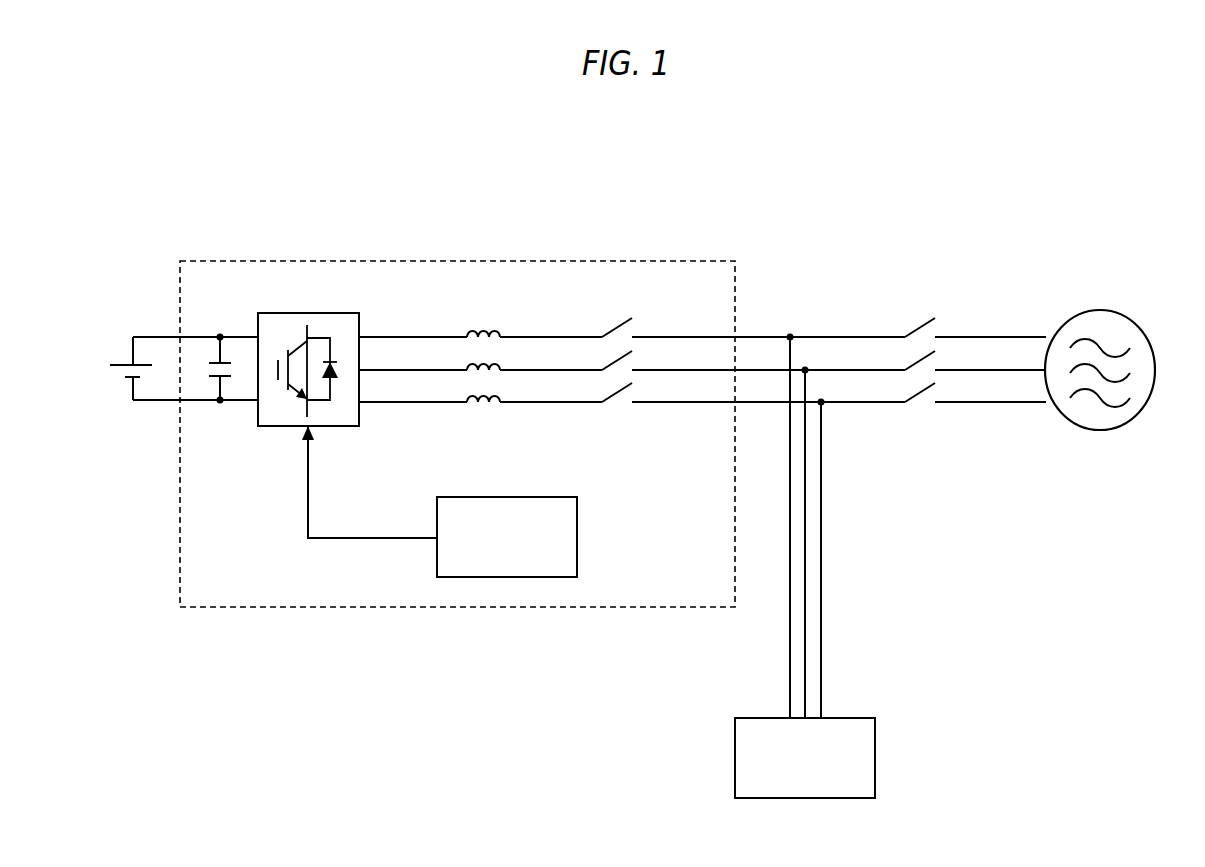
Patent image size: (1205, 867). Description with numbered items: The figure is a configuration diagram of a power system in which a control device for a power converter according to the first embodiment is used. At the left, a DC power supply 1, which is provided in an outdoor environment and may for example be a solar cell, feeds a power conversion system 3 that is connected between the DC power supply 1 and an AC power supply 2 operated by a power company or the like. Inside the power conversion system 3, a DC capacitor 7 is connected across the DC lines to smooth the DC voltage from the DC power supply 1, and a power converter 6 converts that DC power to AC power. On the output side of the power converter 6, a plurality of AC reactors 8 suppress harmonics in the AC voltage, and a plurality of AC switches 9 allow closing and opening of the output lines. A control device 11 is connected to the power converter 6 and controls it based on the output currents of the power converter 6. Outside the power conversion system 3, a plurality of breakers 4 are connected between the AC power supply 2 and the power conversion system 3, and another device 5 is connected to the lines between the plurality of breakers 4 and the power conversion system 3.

The DC power supply 1 is at (122, 355).
The AC power supply 2 is at (1100, 310).
The power conversion system 3 is at (673, 261).
The breakers 4 is at (919, 318).
The another device 5 is at (875, 755).
The power converter 6 is at (306, 313).
The DC capacitor 7 is at (212, 340).
The AC reactors 8 is at (478, 330).
The AC switches 9 is at (613, 326).
The control device 11 is at (517, 497).